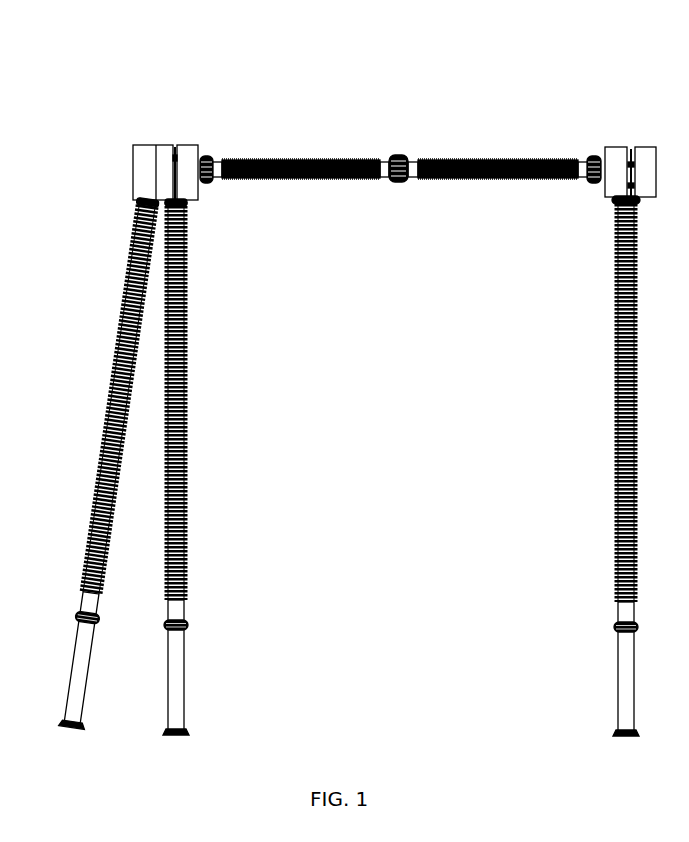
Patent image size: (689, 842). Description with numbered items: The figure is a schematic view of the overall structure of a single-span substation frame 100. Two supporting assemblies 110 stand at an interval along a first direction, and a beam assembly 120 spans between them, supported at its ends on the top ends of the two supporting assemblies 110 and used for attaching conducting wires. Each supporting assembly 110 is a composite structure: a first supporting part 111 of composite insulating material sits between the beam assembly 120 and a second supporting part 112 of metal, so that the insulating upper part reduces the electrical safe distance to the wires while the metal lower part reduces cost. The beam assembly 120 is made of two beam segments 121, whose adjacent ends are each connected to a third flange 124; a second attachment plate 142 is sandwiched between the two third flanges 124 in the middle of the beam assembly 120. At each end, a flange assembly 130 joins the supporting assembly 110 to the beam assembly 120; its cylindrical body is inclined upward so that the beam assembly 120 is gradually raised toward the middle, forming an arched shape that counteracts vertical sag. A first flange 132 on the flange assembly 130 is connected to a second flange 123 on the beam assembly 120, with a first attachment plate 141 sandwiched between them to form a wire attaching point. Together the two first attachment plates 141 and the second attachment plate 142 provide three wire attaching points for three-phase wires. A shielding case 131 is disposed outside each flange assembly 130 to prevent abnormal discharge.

The substation frame 100 is at (605, 110).
The supporting assembly 110 is at (205, 412).
The first supporting part 111 is at (98, 485).
The second supporting part 112 is at (82, 660).
The beam assembly 120 is at (440, 137).
The beam segment 121 is at (350, 158).
The second flange 123 is at (213, 162).
The third flange 124 is at (393, 182).
The flange assembly 130 is at (177, 147).
The shielding case 131 is at (148, 157).
The first flange 132 is at (205, 158).
The first attachment plate 141 is at (208, 187).
The second attachment plate 142 is at (402, 180).